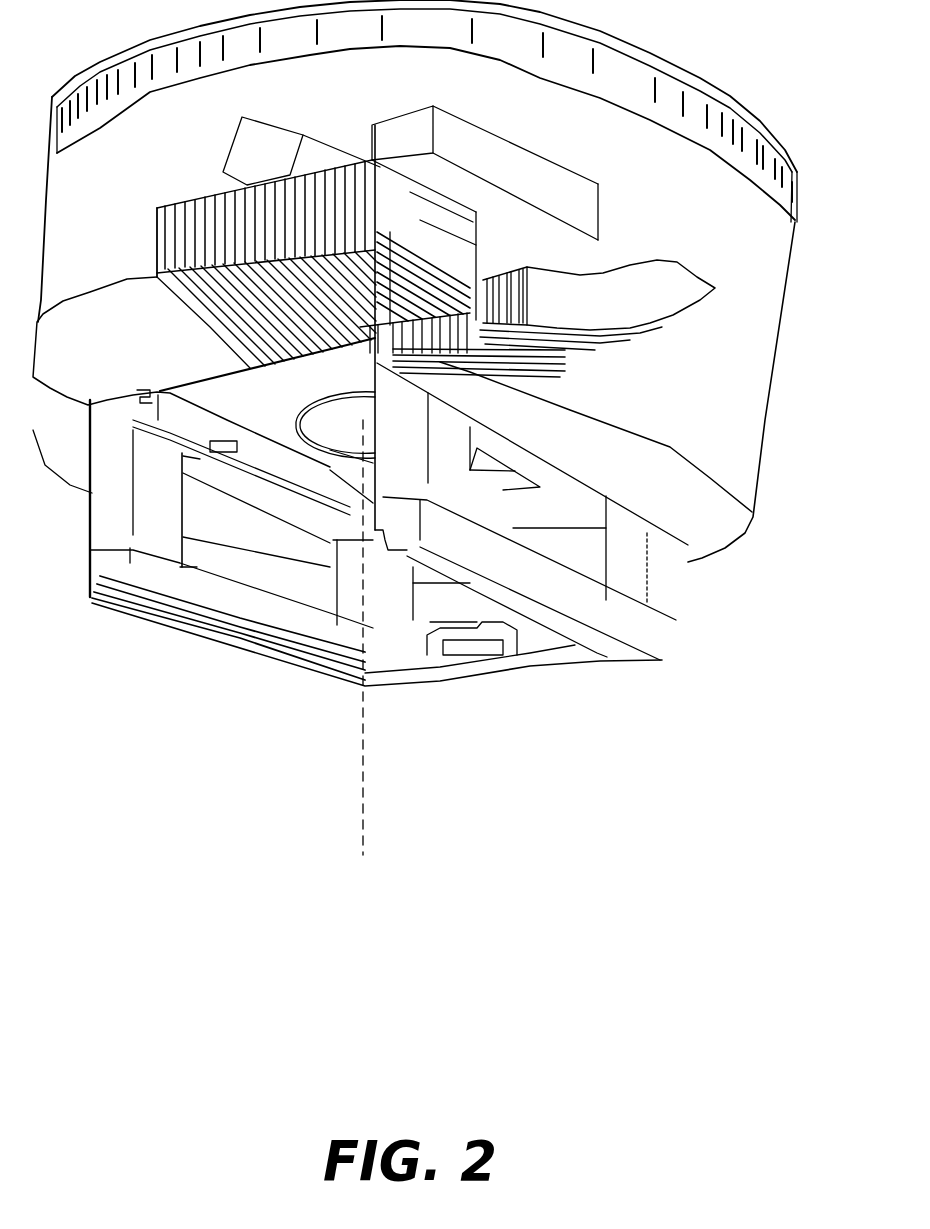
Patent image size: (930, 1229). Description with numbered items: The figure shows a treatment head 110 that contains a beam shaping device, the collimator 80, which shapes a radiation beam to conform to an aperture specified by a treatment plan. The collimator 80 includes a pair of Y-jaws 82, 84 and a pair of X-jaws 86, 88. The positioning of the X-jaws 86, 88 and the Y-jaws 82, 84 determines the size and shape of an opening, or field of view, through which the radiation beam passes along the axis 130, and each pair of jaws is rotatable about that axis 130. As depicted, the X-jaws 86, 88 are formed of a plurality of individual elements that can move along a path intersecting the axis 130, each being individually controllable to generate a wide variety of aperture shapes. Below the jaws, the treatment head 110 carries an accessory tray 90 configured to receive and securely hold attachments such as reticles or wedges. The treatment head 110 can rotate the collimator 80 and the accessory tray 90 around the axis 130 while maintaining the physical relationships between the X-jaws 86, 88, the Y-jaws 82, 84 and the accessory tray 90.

The collimator 80 is at (656, 204).
The Y-jaw 82 is at (260, 116).
The Y-jaw 84 is at (510, 134).
The X-jaw 86 is at (187, 200).
The X-jaw 88 is at (637, 323).
The accessory tray 90 is at (672, 617).
The treatment head 110 is at (783, 285).
The axis 130 is at (381, 668).